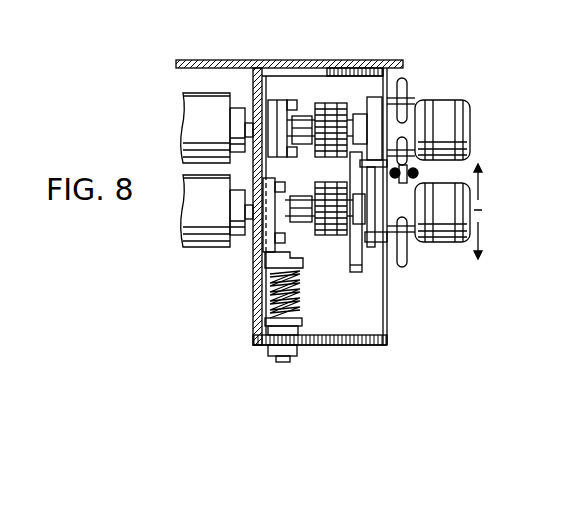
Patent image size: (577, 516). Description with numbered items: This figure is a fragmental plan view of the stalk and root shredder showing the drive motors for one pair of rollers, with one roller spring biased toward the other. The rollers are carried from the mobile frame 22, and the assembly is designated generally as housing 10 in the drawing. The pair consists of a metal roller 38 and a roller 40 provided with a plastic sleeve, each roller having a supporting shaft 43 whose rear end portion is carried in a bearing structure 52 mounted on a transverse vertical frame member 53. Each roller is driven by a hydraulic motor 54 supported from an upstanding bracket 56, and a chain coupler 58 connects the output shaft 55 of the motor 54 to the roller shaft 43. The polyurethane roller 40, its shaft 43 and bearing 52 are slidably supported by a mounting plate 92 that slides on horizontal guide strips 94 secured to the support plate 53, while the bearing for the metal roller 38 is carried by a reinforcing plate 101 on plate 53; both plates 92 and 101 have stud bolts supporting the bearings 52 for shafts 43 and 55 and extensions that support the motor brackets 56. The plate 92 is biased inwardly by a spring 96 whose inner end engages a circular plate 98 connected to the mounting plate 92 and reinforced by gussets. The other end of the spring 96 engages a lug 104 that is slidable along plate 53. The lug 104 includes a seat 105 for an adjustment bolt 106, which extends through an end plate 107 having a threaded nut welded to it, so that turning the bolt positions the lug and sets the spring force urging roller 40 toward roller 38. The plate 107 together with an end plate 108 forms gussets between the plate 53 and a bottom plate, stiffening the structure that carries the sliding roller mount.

The mobile frame 22 is at (205, 49).
The housing 10 is at (370, 302).
The end plate 108 is at (290, 74).
The reinforcing plate 101 is at (263, 78).
The lug 104 is at (300, 325).
The end plate 107 is at (383, 342).
The bearing structure 52 is at (296, 118).
The supporting shaft 43 is at (312, 112).
The chain coupler 58 is at (370, 96).
The circular plate 98 is at (302, 268).
The upstanding bracket 56 is at (382, 80).
The output shaft 55 is at (408, 88).
The hydraulic motor 54 is at (447, 113).
The metal roller 38 is at (195, 122).
The roller 40 is at (202, 215).
The horizontal guide strips 94 is at (262, 225).
The mounting plate 92 is at (265, 272).
The spring 96 is at (300, 296).
The transverse vertical frame member 53 is at (265, 308).
The seat 105 is at (263, 334).
The adjustment bolt 106 is at (272, 356).